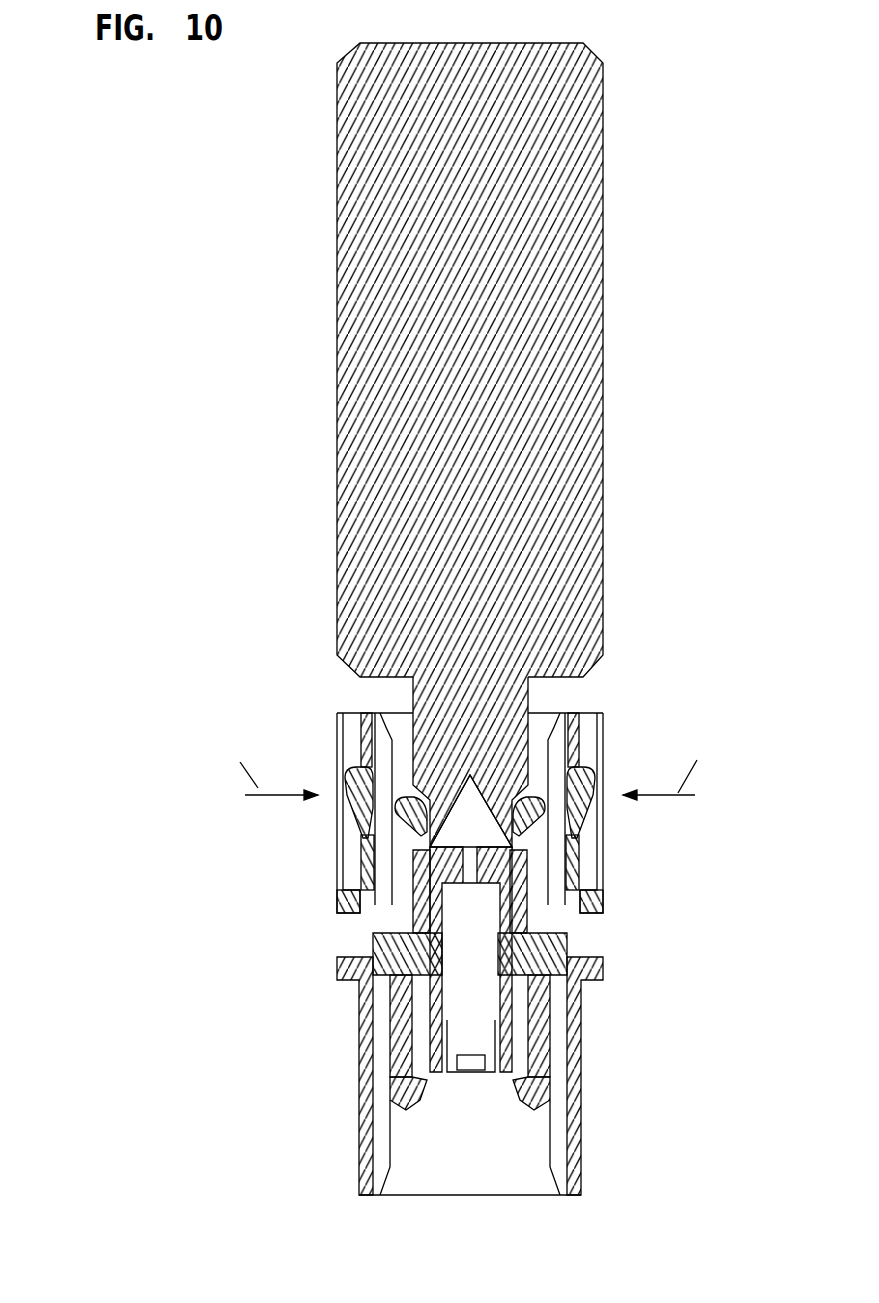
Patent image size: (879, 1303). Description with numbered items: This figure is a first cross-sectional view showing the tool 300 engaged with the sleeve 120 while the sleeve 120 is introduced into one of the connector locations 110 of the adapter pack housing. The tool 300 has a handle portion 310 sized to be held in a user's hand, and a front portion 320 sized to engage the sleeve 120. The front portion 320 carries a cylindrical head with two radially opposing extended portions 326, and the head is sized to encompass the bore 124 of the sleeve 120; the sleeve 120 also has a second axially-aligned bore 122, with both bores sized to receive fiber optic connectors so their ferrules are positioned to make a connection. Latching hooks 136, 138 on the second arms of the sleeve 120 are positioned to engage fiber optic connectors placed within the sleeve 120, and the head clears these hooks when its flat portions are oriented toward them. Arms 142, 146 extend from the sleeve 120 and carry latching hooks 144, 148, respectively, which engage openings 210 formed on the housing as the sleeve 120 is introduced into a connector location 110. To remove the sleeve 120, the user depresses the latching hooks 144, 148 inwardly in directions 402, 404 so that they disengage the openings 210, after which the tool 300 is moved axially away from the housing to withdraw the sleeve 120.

The tool 300 is at (468, 445).
The handle portion 310 is at (335, 277).
The front portion 320 is at (528, 688).
The latching hook 148 is at (358, 768).
The latching hook 144 is at (592, 775).
The inward force direction 404 is at (268, 769).
The direction 402 is at (677, 768).
The openings 210 is at (345, 823).
The latching hook 136 is at (515, 828).
The latching hook 138 is at (400, 825).
The arm 142 is at (577, 862).
The arm 146 is at (415, 858).
The extended portions 326 is at (420, 887).
The bore 124 is at (437, 903).
The sleeve 120 is at (543, 1023).
The connector locations 110 is at (578, 1108).
The bore 122 is at (512, 1065).